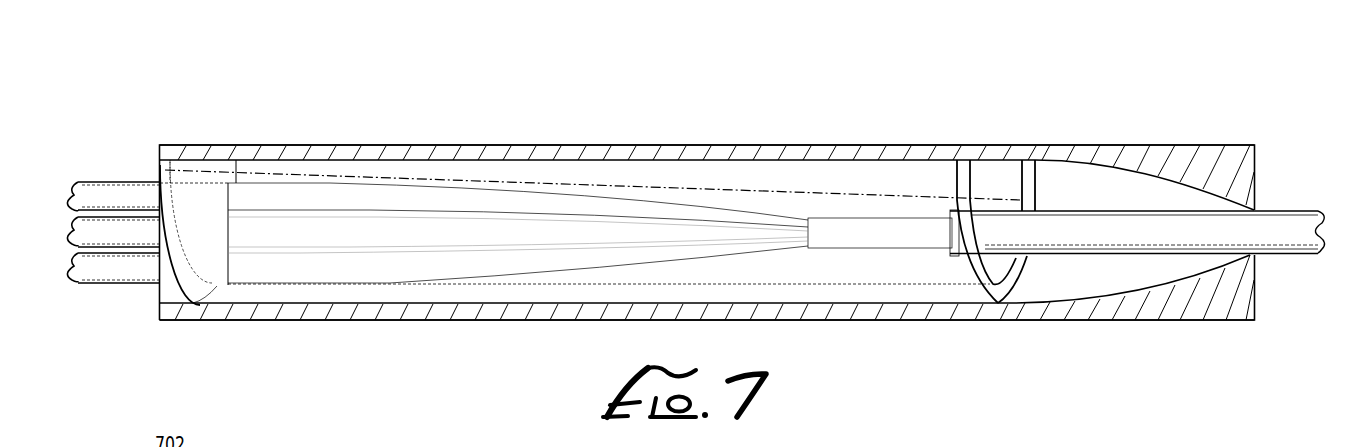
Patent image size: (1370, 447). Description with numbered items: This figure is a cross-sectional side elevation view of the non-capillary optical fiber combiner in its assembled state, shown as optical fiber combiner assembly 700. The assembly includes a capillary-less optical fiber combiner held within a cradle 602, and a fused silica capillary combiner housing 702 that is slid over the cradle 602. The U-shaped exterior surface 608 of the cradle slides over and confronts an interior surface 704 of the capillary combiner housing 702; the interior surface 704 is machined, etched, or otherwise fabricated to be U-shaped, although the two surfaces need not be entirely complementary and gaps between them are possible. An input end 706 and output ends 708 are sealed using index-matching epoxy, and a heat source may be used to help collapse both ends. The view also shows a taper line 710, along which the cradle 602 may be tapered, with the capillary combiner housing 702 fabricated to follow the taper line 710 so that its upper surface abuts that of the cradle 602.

The optical fiber combiner assembly 700 is at (1087, 92).
The fused silica capillary combiner housing 702 is at (858, 153).
The interior surface 704 is at (447, 303).
The input end 706 is at (146, 296).
The output end 708 is at (1258, 199).
The taper line 710 is at (663, 187).
The cradle 602 is at (160, 168).
The U-shaped exterior surface 608 is at (933, 293).